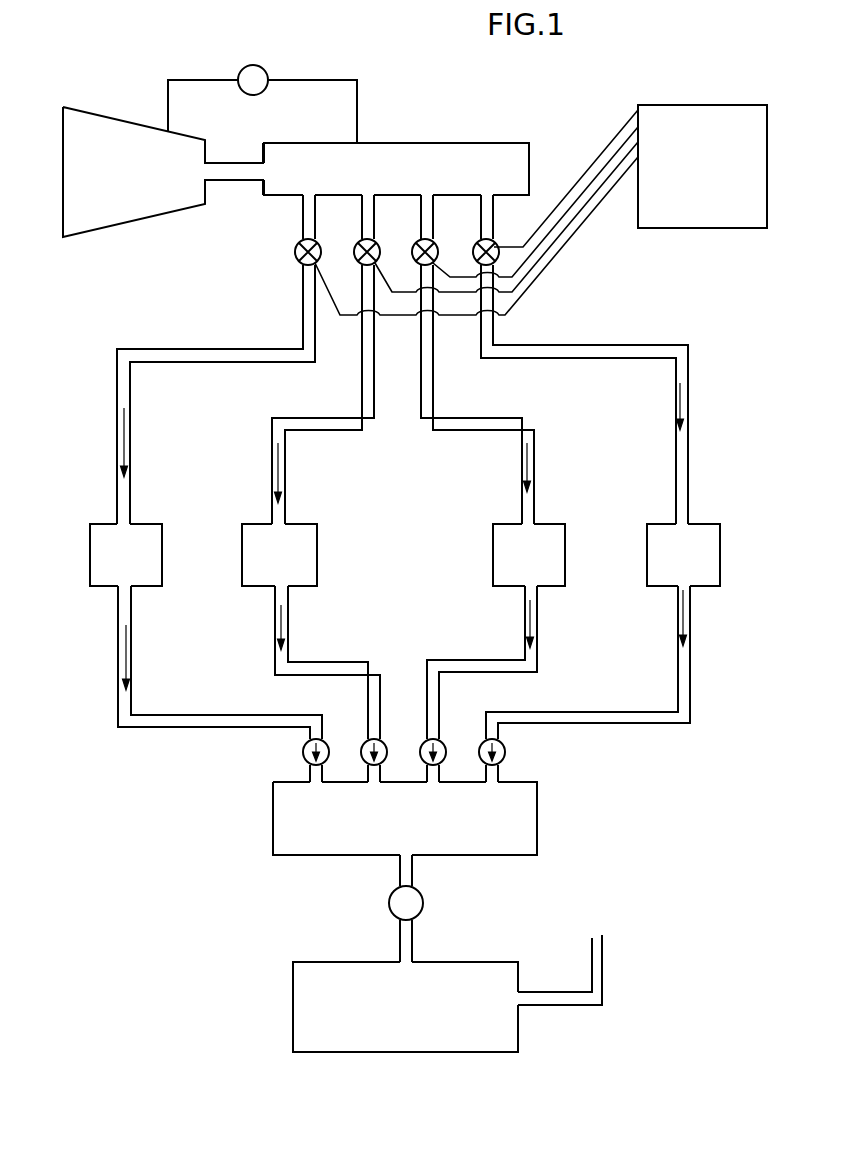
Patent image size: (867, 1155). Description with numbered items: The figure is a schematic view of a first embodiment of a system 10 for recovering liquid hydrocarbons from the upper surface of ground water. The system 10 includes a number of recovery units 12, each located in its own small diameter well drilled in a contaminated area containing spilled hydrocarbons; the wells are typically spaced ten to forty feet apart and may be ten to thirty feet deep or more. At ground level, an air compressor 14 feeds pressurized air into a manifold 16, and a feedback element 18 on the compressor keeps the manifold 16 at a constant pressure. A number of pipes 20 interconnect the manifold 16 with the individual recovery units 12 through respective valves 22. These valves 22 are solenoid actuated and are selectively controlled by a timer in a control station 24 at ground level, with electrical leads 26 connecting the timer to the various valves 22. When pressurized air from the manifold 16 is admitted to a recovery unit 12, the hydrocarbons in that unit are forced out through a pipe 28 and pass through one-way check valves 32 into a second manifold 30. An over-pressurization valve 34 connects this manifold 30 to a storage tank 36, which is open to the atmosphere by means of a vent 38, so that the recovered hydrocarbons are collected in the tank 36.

The system 10 is at (714, 339).
The recovery unit 12 is at (90, 584).
The air compressor 14 is at (135, 211).
The manifold 16 is at (450, 150).
The feedback element 18 is at (261, 72).
The pipe 20 is at (117, 373).
The valve 22 is at (476, 241).
The control station 24 is at (697, 228).
The electrical lead 26 is at (578, 184).
The pipe 28 is at (143, 727).
The manifold 30 is at (537, 814).
The one-way check valve 32 is at (323, 743).
The over-pressurization valve 34 is at (423, 903).
The storage tank 36 is at (433, 1033).
The vent 38 is at (602, 965).